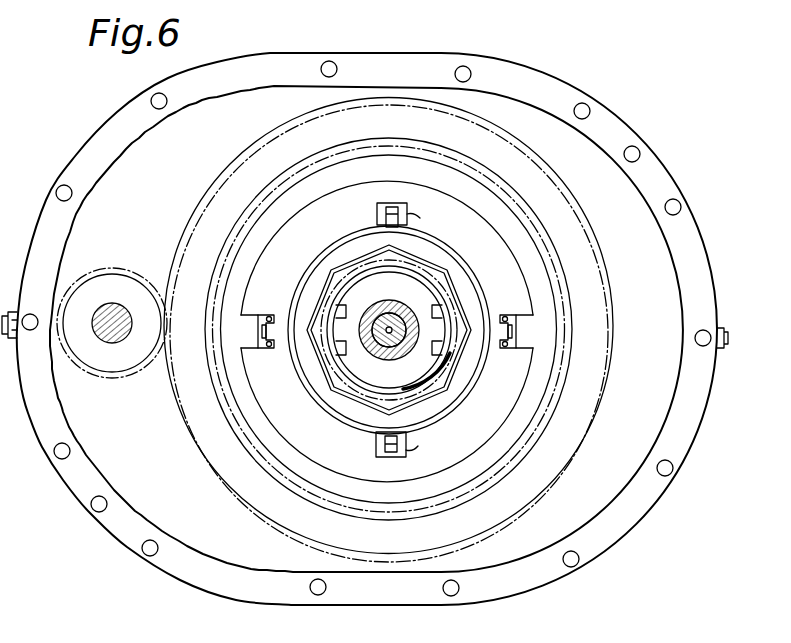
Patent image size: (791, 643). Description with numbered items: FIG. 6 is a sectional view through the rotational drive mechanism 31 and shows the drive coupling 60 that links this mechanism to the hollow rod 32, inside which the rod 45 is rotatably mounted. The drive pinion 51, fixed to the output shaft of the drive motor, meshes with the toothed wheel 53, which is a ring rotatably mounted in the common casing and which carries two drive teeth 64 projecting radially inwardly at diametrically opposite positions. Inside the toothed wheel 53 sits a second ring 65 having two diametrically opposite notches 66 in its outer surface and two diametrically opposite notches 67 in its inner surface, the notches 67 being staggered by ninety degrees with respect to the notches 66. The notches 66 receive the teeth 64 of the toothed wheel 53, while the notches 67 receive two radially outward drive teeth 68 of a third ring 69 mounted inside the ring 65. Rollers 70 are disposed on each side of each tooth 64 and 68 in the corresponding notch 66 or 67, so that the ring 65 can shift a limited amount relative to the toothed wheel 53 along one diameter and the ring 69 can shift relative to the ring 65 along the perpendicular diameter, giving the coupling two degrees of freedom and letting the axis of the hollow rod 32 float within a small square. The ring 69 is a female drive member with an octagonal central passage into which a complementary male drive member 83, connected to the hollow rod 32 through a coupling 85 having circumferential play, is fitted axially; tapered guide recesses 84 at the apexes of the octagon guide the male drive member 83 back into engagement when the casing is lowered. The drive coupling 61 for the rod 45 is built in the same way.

The rotational drive mechanism 31 is at (176, 186).
The drive pinion 51 is at (108, 374).
The toothed wheel 53 is at (210, 432).
The drive coupling 60 is at (267, 423).
The drive teeth 64 is at (246, 326).
The notches 66 is at (275, 313).
The drive teeth 68 is at (393, 203).
The rollers 70 is at (378, 216).
The drive coupling 61 is at (420, 216).
The notches 67 is at (407, 456).
The second ring 65 is at (389, 342).
The third ring 69 is at (470, 293).
The tapered guide recesses 84 is at (410, 249).
The male drive member 83 is at (337, 377).
The coupling 85 is at (436, 350).
The hollow rod 32 is at (402, 298).
The rod 45 is at (377, 350).